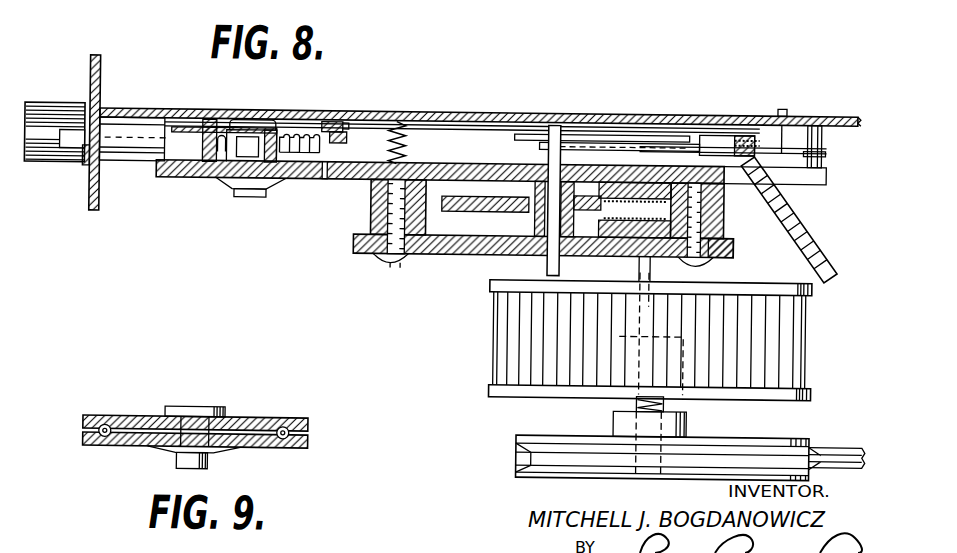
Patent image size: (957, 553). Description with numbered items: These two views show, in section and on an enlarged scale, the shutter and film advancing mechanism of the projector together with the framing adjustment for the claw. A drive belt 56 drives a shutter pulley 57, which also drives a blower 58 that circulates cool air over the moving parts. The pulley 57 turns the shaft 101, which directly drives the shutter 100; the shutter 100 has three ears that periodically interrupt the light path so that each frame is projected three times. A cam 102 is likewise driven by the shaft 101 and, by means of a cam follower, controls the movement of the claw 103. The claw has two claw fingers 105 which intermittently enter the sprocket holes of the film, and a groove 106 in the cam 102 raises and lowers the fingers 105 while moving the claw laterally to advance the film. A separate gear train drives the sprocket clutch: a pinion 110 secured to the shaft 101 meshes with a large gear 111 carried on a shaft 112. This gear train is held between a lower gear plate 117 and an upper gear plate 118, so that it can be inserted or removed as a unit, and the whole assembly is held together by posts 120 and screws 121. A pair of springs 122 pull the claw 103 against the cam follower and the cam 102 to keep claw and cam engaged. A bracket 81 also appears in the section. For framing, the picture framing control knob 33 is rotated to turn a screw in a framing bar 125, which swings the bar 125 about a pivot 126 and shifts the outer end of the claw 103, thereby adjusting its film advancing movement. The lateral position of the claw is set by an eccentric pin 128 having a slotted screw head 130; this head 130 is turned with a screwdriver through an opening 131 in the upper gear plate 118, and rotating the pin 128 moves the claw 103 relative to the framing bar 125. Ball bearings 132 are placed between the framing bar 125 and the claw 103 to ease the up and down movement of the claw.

In FIG. 8, the picture framing control knob 33 is at (58, 112).
In FIG. 8, the drive belt 56 is at (830, 443).
In FIG. 8, the shutter pulley 57 is at (605, 462).
In FIG. 8, the blower 58 is at (783, 346).
In FIG. 8, the bracket 81 is at (800, 219).
In FIG. 8, the shutter 100 is at (826, 138).
In FIG. 8, the shaft 101 is at (655, 264).
In FIG. 8, the cam 102 is at (728, 132).
In FIG. 8, the claw 103 is at (505, 108).
In FIG. 9, the claw 103 is at (257, 414).
In FIG. 8, the claw fingers 105 is at (782, 106).
In FIG. 8, the groove 106 is at (578, 124).
In FIG. 8, the pinion 110 is at (617, 214).
In FIG. 8, the large gear 111 is at (438, 251).
In FIG. 8, the shaft 112 is at (548, 179).
In FIG. 8, the lower gear plate 117 is at (470, 200).
In FIG. 8, the upper gear plate 118 is at (317, 168).
In FIG. 8, the posts 120 is at (378, 195).
In FIG. 8, the screws 121 is at (700, 162).
In FIG. 8, the springs 122 is at (396, 118).
In FIG. 8, the framing bar 125 is at (177, 127).
In FIG. 9, the framing bar 125 is at (295, 440).
In FIG. 8, the pivot 126 is at (248, 123).
In FIG. 8, the eccentric pin 128 is at (333, 119).
In FIG. 9, the eccentric pin 128 is at (193, 410).
In FIG. 9, the screw head 130 is at (209, 457).
In FIG. 8, the opening 131 is at (335, 177).
In FIG. 9, the ball bearings 132 is at (107, 422).